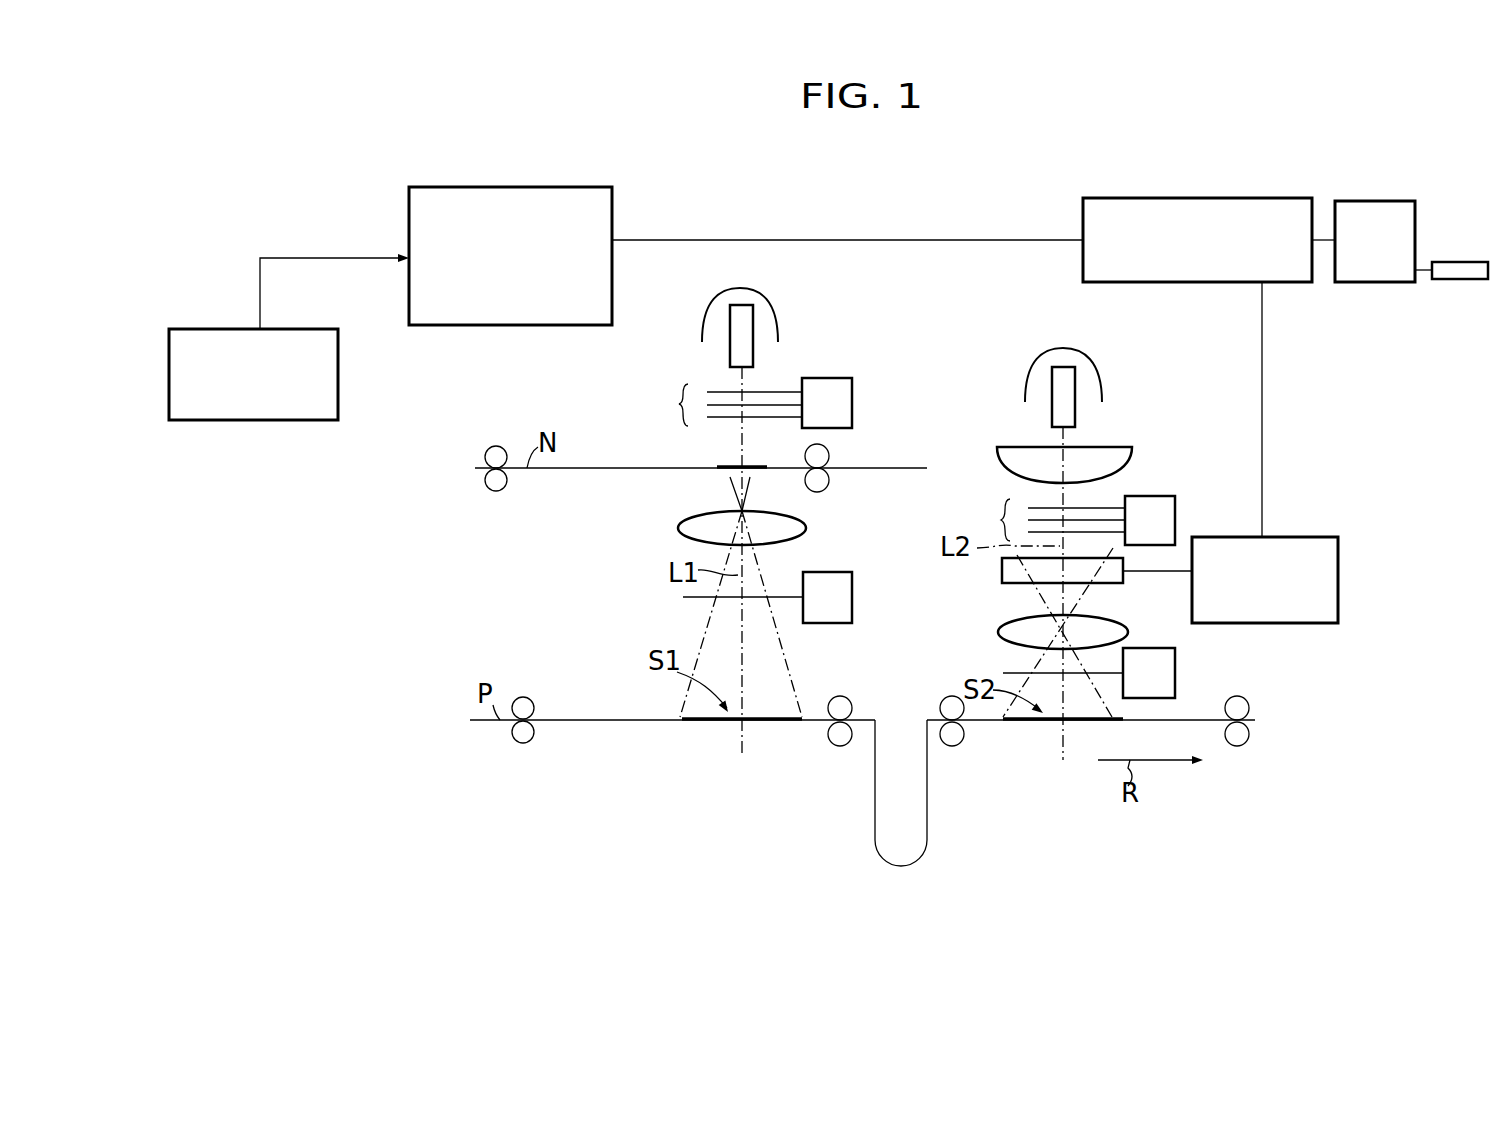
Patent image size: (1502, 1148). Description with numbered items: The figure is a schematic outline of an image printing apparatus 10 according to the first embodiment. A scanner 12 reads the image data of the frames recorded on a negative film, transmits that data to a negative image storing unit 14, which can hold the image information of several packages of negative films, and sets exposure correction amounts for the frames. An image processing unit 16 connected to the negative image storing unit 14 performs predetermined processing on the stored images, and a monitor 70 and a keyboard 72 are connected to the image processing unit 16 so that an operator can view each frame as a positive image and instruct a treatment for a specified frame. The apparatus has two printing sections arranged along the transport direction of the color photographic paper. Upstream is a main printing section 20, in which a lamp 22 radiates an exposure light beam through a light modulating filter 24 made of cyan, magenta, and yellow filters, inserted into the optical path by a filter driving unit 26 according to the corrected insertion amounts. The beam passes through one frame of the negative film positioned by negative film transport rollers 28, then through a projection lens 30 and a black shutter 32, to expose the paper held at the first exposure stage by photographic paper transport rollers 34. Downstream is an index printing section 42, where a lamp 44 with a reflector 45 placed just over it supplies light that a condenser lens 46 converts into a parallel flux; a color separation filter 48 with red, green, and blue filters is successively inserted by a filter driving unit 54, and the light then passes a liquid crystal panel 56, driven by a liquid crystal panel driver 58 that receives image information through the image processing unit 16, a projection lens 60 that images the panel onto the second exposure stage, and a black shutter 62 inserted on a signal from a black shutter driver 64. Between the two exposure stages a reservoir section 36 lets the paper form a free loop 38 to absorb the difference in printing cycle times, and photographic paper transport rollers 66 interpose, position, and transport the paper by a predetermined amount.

The image printing apparatus 10 is at (492, 845).
The scanner 12 is at (233, 329).
The negative image storing unit 14 is at (409, 229).
The image processing unit 16 is at (1201, 283).
The main printing section 20 is at (880, 313).
The lamp 22 is at (753, 352).
The light modulating filter 24 is at (679, 404).
The filter driving unit 26 is at (838, 378).
The negative film transport rollers 28 is at (830, 450).
The projection lens 30 is at (682, 520).
The black shutter 32 is at (692, 598).
The photographic paper transport rollers 34 is at (840, 692).
The reservoir section 36 is at (960, 857).
The paper loop 38 is at (875, 835).
The index printing section 42 is at (1058, 330).
The lamp 44 is at (1077, 415).
The reflector 45 is at (1088, 363).
The condenser lens 46 is at (997, 449).
The color separation filter 48 is at (1001, 520).
The filter driving unit 54 is at (1177, 515).
The liquid crystal panel 56 is at (1002, 578).
The liquid crystal panel driver 58 is at (1242, 625).
The projection lens 60 is at (1107, 618).
The black shutter 62 is at (1012, 672).
The black shutter driver 64 is at (1177, 680).
The photographic paper transport rollers 66 is at (1270, 731).
The monitor 70 is at (1355, 283).
The keyboard 72 is at (1450, 280).